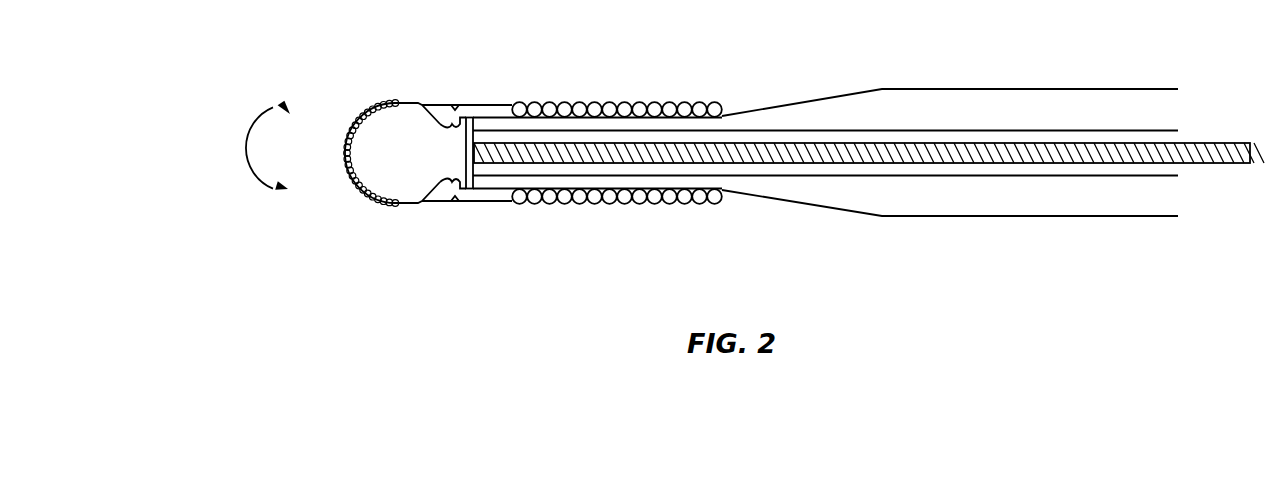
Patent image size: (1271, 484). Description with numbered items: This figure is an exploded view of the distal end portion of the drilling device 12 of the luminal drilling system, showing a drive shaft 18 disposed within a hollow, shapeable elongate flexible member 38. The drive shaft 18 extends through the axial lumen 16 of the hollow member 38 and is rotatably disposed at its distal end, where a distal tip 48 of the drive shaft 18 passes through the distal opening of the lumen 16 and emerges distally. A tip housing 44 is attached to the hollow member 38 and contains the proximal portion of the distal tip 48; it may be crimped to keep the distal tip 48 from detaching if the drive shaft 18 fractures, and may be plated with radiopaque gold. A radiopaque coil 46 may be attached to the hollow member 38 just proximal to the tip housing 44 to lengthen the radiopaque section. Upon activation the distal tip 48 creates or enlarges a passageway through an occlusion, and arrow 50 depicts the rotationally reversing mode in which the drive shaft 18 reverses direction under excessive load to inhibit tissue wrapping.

The drilling device 12 is at (831, 272).
The axial lumen 16 is at (830, 137).
The drive shaft 18 is at (937, 152).
The elongate flexible member 38 is at (1018, 108).
The tip housing 44 is at (473, 105).
The coil 46 is at (580, 108).
The distal tip 48 is at (385, 133).
The arrow 50 is at (283, 107).